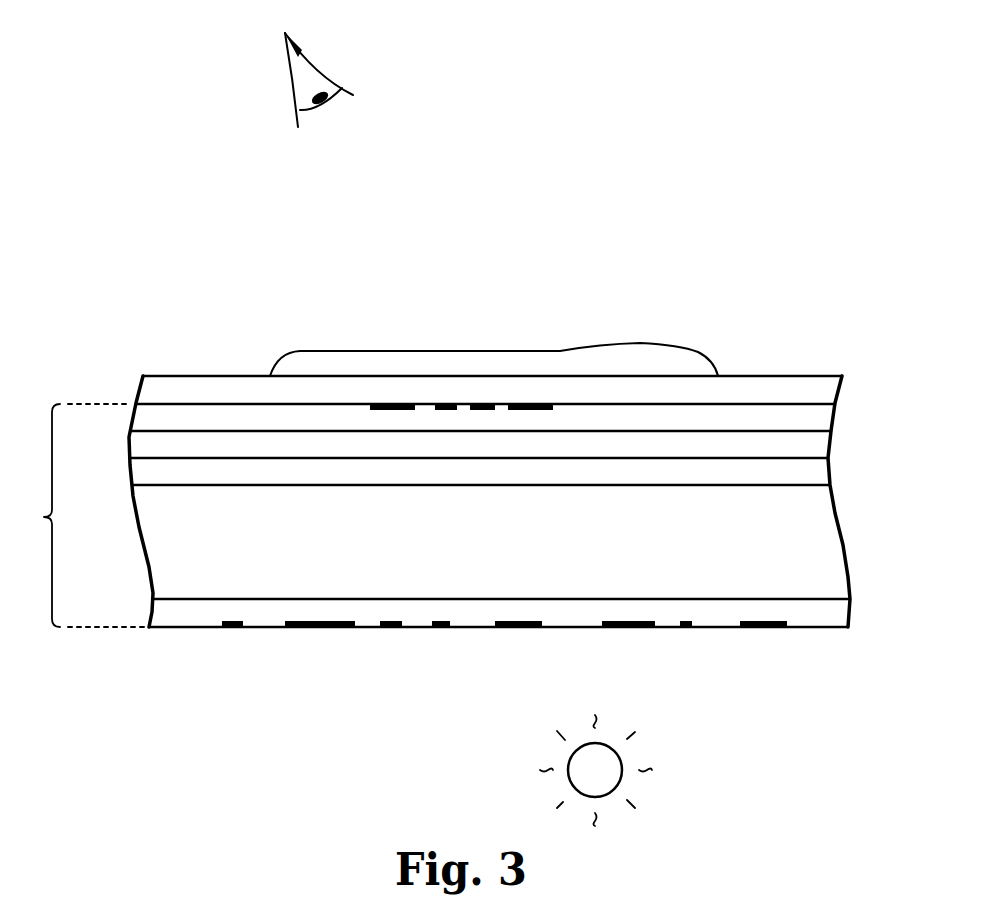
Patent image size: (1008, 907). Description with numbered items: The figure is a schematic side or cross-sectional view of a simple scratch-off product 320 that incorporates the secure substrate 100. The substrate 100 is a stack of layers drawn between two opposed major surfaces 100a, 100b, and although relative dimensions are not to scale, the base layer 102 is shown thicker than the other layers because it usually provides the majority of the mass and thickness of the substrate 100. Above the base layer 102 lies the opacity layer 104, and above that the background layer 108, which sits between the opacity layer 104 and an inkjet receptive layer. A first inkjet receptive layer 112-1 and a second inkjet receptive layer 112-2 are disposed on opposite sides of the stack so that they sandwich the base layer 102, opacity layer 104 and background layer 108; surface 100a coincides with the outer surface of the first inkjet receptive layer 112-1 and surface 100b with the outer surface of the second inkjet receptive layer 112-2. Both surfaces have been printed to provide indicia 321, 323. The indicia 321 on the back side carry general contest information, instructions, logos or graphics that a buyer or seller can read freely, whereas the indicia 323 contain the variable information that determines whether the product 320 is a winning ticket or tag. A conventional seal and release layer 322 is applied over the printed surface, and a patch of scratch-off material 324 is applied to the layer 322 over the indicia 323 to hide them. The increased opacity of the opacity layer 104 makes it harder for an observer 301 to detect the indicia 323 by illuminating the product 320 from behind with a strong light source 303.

The secure substrate 100 is at (428, 501).
The major surface 100a is at (186, 645).
The major surface 100b is at (165, 388).
The base layer 102 is at (827, 548).
The opacity layer 104 is at (817, 474).
The background layer 108 is at (817, 447).
The first inkjet receptive layer 112-1 is at (833, 615).
The second inkjet receptive layer 112-2 is at (817, 418).
The observer 301 is at (318, 72).
The light source 303 is at (622, 762).
The scratch-off product 320 is at (137, 225).
The indicia 321 is at (235, 628).
The seal and release layer 322 is at (826, 388).
The indicia 323 is at (523, 404).
The scratch-off material 324 is at (662, 360).